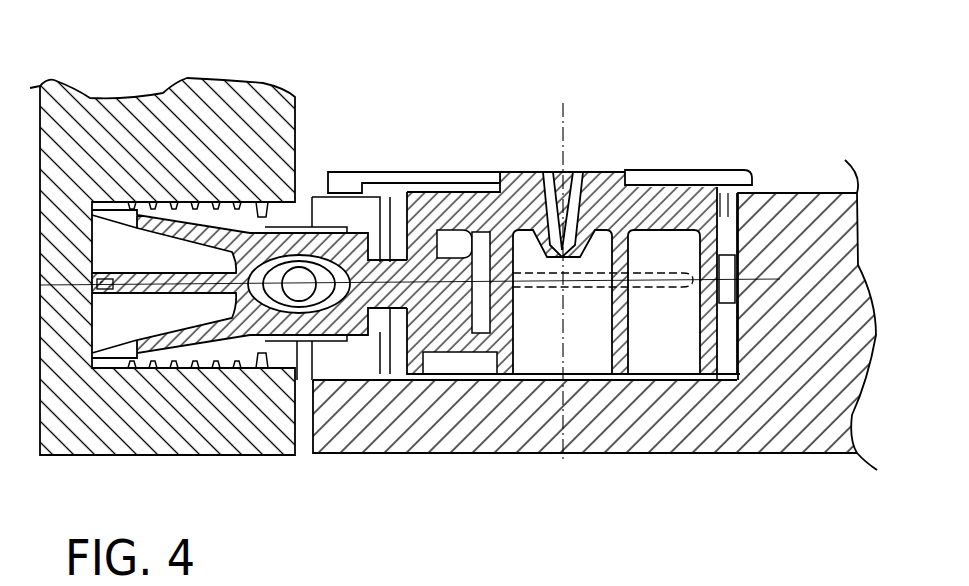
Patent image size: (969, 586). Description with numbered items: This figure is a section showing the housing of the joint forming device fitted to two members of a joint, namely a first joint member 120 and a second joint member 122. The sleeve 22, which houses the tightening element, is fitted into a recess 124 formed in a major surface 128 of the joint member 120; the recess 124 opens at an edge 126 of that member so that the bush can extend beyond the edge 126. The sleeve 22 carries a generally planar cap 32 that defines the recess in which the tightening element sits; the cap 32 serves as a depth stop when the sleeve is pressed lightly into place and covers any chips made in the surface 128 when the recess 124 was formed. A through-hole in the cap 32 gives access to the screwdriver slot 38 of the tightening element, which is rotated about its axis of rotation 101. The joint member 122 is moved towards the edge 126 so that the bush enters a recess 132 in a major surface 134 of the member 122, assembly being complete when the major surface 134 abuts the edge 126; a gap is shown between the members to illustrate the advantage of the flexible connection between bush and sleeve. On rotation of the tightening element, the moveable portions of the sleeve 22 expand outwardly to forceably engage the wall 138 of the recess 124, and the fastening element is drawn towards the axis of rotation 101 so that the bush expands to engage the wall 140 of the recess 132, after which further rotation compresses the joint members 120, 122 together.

The sleeve 22 is at (727, 190).
The cap 32 is at (732, 177).
The screwdriver slot 38 is at (546, 200).
The axis of rotation 101 is at (565, 124).
The joint member 120 is at (793, 442).
The joint member 122 is at (110, 447).
The recess 124 is at (357, 368).
The edge 126 is at (306, 440).
The major surface 128 is at (798, 193).
The recess 132 is at (180, 200).
The major surface 134 is at (297, 137).
The wall 138 is at (729, 378).
The wall 140 is at (297, 208).